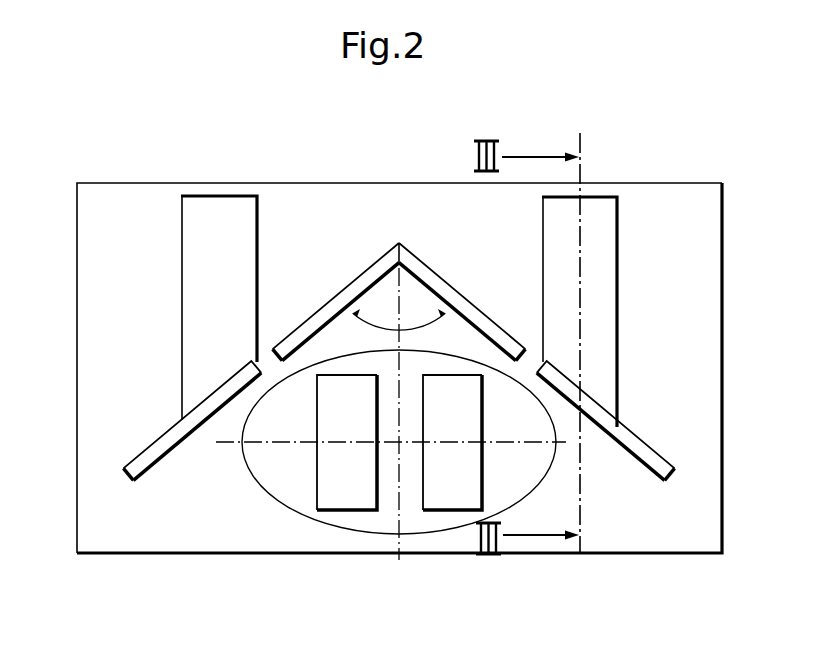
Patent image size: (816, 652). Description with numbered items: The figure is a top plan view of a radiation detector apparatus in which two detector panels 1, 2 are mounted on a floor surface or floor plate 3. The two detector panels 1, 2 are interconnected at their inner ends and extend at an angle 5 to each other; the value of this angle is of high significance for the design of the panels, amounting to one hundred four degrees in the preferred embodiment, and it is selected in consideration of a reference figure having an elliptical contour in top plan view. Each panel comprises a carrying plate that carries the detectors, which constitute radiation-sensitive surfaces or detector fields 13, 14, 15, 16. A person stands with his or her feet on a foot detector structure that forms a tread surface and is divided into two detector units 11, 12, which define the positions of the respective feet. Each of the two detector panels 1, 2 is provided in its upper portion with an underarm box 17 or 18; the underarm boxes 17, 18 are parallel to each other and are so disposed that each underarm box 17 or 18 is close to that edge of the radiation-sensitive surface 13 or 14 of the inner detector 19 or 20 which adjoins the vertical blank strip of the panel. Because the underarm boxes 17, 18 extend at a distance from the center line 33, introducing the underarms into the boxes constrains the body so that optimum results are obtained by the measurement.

The detector panel 1 is at (162, 443).
The detector panel 2 is at (625, 432).
The floor plate 3 is at (693, 213).
The angle 5 is at (387, 330).
The detector unit 11 is at (342, 492).
The detector unit 12 is at (443, 497).
The detector field 13 is at (317, 337).
The detector field 14 is at (480, 333).
The detector field 15 is at (190, 438).
The detector field 16 is at (613, 427).
The underarm box 17 is at (202, 225).
The underarm box 18 is at (597, 215).
The inner detector 19 is at (330, 303).
The inner detector 20 is at (437, 285).
The center line 33 is at (400, 535).